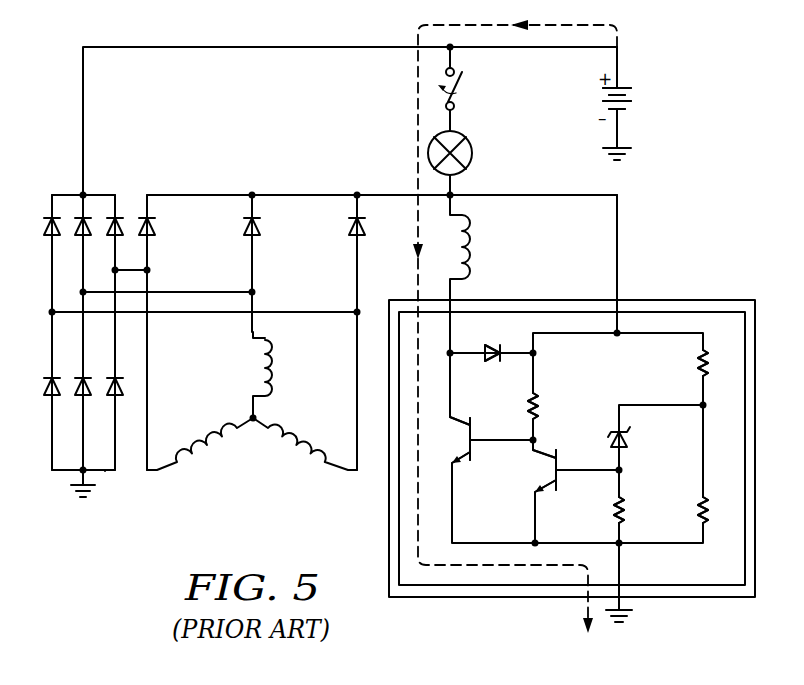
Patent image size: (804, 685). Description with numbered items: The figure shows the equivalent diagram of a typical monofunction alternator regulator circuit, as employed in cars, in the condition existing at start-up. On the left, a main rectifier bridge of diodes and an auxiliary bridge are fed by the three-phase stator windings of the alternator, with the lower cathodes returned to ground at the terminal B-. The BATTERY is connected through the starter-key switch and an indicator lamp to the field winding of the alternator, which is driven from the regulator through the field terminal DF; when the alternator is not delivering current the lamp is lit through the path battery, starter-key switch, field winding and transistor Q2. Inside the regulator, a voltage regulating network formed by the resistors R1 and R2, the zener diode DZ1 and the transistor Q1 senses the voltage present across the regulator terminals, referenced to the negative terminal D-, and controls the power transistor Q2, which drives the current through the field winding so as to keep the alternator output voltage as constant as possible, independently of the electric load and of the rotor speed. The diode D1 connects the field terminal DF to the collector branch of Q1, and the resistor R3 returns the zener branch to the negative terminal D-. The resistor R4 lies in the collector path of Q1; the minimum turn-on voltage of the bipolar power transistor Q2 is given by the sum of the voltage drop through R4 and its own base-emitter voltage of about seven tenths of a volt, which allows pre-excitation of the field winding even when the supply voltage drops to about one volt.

The battery negative terminal B- is at (105, 471).
The regulator terminal D- is at (566, 543).
The field terminal DF is at (453, 346).
The diode D1 is at (490, 365).
The transistor Q1 is at (536, 471).
The transistor Q2 is at (451, 440).
The resistor R1 is at (718, 363).
The resistor R2 is at (718, 510).
The resistor R3 is at (634, 510).
The resistance R4 is at (548, 406).
The zener diode DZ1 is at (639, 437).
The battery BATTERY is at (632, 98).